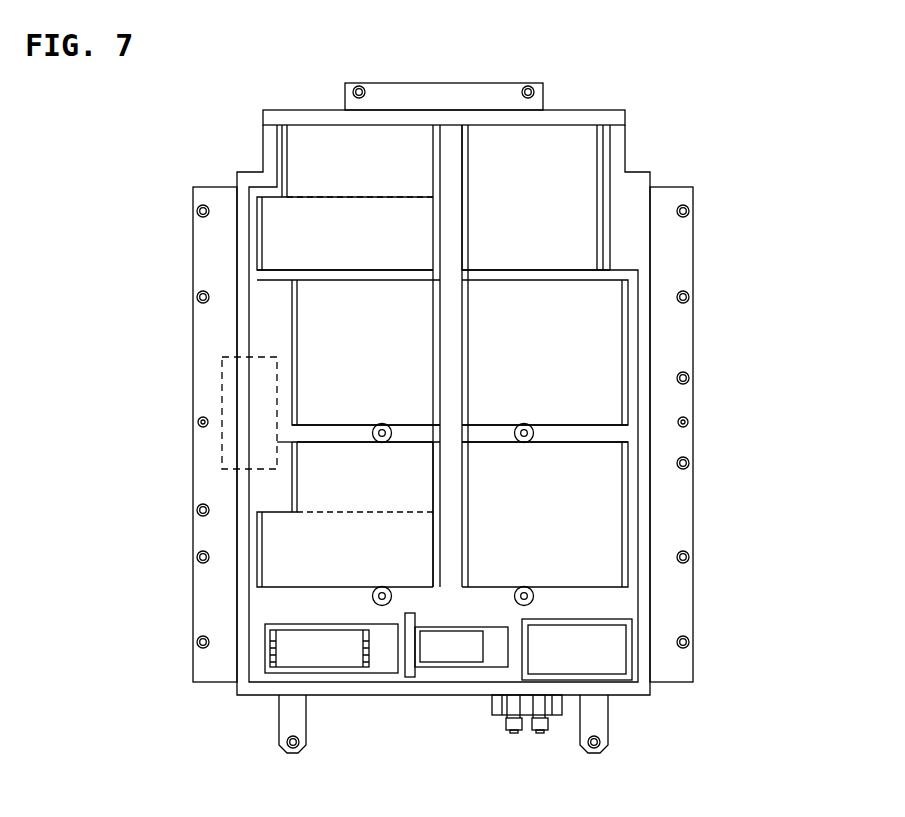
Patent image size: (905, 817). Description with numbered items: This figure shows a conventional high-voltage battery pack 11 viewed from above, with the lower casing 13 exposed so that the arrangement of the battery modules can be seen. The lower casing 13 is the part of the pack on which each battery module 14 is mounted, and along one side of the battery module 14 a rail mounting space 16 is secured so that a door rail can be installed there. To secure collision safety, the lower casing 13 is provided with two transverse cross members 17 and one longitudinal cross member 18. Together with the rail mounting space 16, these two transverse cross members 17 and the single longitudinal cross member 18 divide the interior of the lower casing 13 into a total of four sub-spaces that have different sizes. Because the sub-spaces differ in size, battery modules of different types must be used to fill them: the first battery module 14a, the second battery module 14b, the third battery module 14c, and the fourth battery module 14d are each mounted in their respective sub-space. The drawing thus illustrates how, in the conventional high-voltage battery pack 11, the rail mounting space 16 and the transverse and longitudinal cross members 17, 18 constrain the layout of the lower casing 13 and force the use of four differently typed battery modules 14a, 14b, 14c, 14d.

The conventional high-voltage battery pack 11 is at (703, 239).
The lower casing 13 is at (640, 522).
The battery module 14 is at (443, 359).
The first battery module 14a is at (287, 238).
The second battery module 14b is at (322, 165).
The third battery module 14c is at (337, 332).
The fourth battery module 14d is at (553, 185).
The rail mounting space 16 is at (222, 400).
The transverse cross member 17 is at (535, 270).
The longitudinal cross member 18 is at (449, 555).